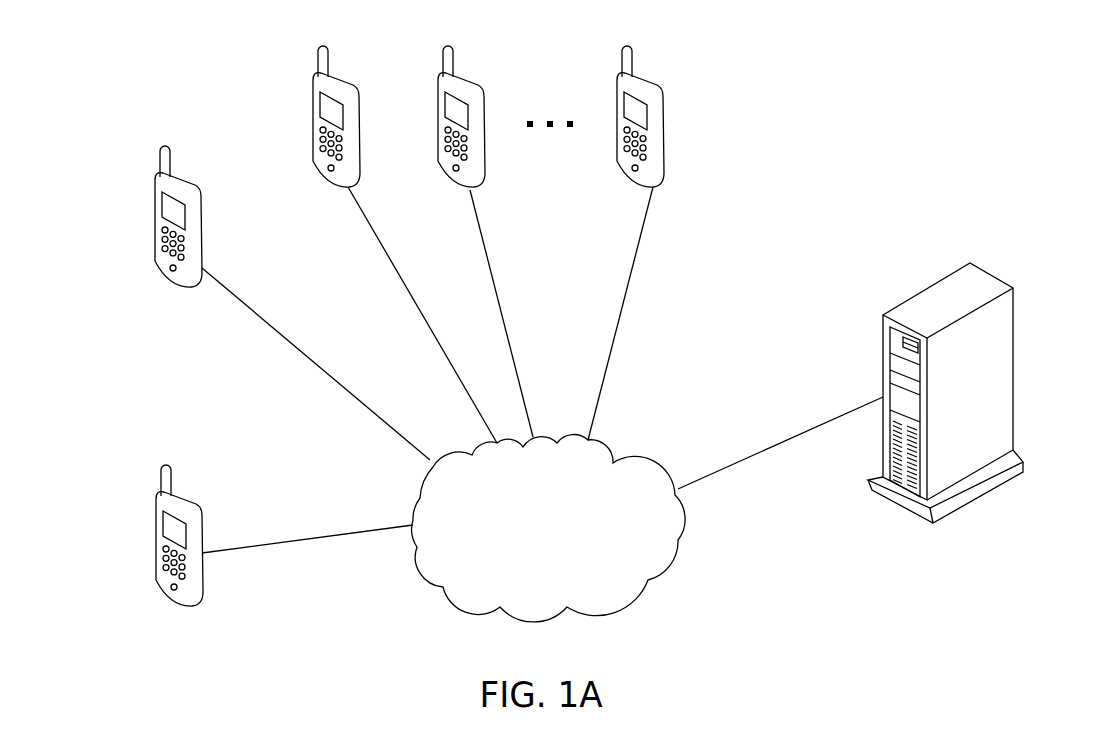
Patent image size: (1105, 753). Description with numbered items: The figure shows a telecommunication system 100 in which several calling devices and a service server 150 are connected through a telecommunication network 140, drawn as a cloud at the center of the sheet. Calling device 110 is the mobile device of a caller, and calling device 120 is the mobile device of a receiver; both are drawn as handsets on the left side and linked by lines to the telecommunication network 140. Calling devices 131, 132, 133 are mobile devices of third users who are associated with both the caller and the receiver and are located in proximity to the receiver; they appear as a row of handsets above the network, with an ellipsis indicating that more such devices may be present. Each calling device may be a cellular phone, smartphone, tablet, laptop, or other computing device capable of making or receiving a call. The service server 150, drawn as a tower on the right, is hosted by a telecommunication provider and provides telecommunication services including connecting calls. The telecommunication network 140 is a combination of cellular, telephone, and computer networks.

The telecommunication system 100 is at (914, 75).
The calling device 110 is at (157, 528).
The calling device 120 is at (155, 208).
The calling device 131 is at (313, 90).
The calling device 132 is at (438, 89).
The calling device 133 is at (617, 90).
The telecommunication network 140 is at (620, 608).
The service server 150 is at (993, 275).